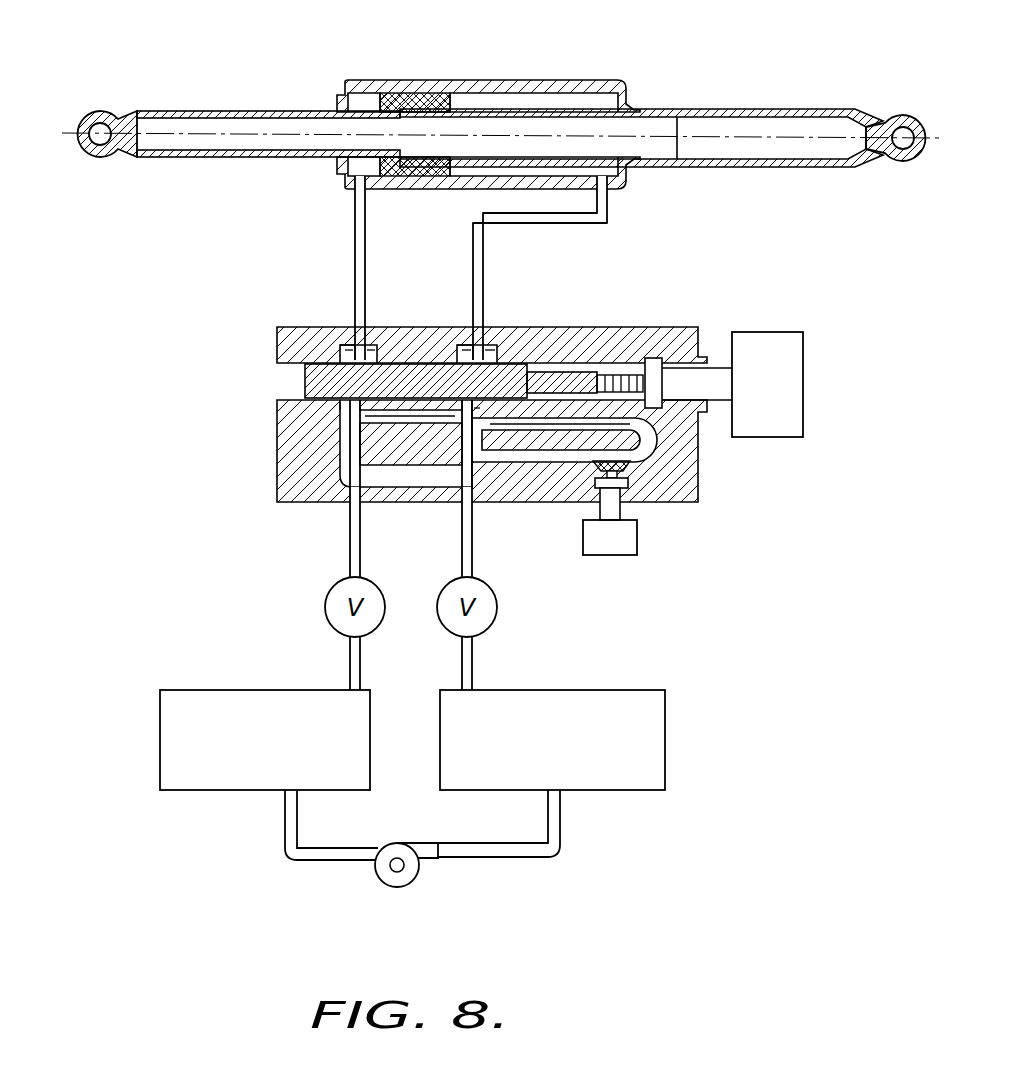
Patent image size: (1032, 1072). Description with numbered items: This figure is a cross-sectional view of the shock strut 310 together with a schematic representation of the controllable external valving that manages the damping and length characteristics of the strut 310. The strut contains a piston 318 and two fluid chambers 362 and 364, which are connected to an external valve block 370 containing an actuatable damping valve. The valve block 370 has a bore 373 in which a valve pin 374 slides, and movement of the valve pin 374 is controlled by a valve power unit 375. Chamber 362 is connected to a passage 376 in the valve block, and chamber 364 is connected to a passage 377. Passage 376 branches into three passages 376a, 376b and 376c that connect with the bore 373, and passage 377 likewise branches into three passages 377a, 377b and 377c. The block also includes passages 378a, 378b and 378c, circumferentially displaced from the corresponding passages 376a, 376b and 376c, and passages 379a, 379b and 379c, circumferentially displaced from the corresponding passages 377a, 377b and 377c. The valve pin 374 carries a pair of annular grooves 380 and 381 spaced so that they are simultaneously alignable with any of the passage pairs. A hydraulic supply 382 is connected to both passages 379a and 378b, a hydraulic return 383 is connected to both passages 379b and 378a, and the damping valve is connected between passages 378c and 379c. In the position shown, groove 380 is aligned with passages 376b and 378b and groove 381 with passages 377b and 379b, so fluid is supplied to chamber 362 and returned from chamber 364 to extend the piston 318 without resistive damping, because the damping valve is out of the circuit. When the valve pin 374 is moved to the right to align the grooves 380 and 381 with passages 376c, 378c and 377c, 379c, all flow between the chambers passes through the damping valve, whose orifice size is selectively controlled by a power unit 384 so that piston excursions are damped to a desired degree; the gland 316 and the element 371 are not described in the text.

The strut 310 is at (728, 83).
The gland end cap 316 is at (516, 79).
The piston 318 is at (250, 111).
The fluid chamber 362 is at (482, 172).
The fluid chamber 364 is at (345, 168).
The valve block 370 is at (630, 322).
The relief valve 371 is at (641, 467).
The bore 373 is at (627, 337).
The valve pin 374 is at (338, 401).
The valve power unit 375 is at (802, 338).
The passage 376 is at (462, 327).
The passage 376a is at (458, 345).
The passage 376b is at (490, 345).
The passage 376c is at (503, 348).
The passage 377 is at (378, 327).
The passage 377a is at (336, 350).
The passage 377b is at (350, 344).
The passage 377c is at (388, 347).
The passage 378a is at (433, 423).
The passage 378b is at (478, 415).
The passage 378c is at (488, 403).
The passage 379a is at (345, 402).
The passage 379b is at (338, 404).
The passage 379c is at (377, 437).
The annular groove 380 is at (558, 371).
The annular groove 381 is at (305, 381).
The hydraulic supply 382 is at (632, 790).
The hydraulic return 383 is at (217, 790).
The power unit 384 is at (627, 548).